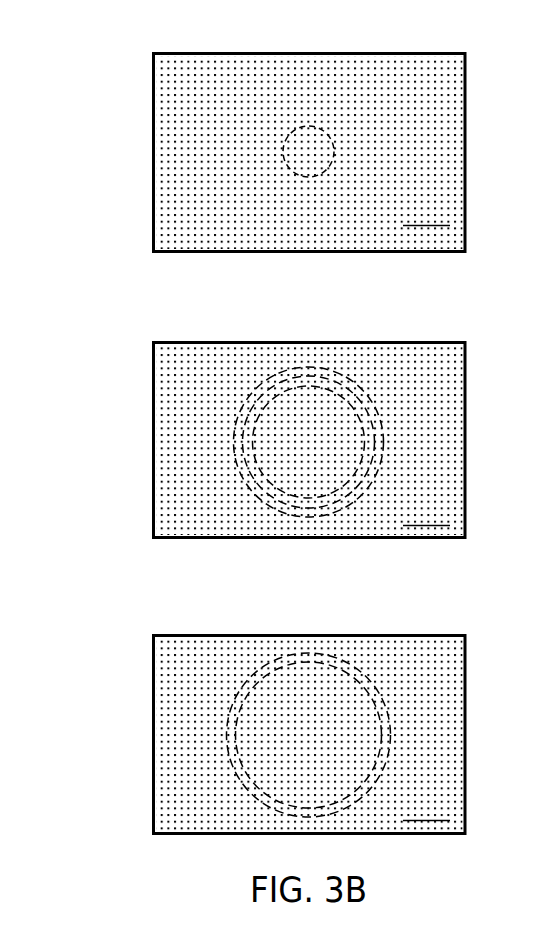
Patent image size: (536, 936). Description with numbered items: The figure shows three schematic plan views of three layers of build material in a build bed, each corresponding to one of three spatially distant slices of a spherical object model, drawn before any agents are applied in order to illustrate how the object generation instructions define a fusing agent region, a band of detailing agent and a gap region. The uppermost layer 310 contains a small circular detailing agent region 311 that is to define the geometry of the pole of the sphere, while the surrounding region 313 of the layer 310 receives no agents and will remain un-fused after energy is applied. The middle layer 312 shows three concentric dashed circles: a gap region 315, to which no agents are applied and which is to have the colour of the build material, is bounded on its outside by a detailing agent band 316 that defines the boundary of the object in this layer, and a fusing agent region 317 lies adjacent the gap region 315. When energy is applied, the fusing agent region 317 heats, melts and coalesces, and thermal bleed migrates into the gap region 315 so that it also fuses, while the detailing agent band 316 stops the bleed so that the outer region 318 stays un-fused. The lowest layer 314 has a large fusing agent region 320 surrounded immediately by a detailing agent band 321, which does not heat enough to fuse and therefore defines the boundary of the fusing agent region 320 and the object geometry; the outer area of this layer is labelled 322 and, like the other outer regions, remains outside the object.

The layer of build material 310 is at (130, 159).
The detailing agent region 311 is at (298, 128).
The region of layer 313 is at (428, 213).
The layer of build material 312 is at (129, 447).
The gap region 315 is at (275, 390).
The detailing agent band 316 is at (347, 380).
The fusing agent region 317 is at (307, 478).
The region of build material 318 is at (428, 513).
The layer of build material 314 is at (130, 740).
The fusing agent region 320 is at (273, 700).
The detailing agent band 321 is at (348, 665).
The bond pad surface 322 is at (428, 808).